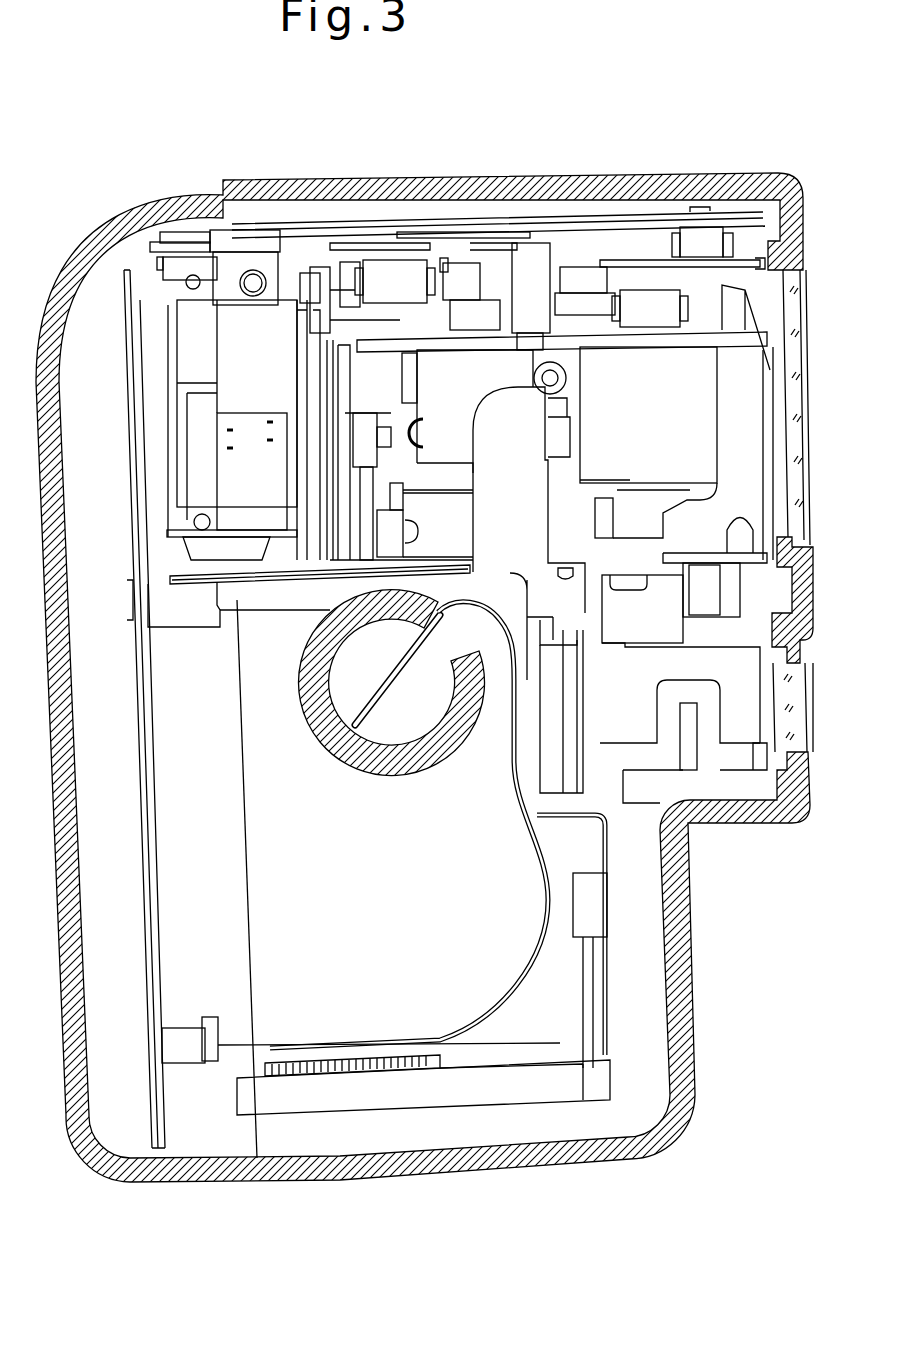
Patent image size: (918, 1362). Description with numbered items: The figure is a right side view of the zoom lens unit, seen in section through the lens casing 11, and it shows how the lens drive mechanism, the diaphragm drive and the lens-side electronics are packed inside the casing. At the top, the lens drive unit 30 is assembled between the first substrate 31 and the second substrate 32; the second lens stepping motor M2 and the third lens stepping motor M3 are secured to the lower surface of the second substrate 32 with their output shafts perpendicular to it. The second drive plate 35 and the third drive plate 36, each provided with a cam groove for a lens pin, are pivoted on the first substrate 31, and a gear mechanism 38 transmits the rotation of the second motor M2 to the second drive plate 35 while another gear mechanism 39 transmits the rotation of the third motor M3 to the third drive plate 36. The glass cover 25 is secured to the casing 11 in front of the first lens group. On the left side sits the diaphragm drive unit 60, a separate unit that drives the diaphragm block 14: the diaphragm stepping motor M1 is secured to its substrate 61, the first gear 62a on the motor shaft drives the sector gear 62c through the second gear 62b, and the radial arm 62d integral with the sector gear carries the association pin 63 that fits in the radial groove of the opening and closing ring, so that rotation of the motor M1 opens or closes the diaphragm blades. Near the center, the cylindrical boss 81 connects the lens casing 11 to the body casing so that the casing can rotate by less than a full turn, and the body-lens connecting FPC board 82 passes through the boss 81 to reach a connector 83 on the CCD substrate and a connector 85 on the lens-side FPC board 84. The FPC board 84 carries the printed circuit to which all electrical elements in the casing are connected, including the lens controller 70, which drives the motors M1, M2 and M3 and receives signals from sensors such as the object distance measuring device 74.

The lens casing 11 is at (678, 995).
The diaphragm block 14 is at (487, 283).
The glass cover 25 is at (803, 540).
The lens drive unit 30 is at (455, 216).
The first substrate 31 is at (625, 217).
The second substrate 32 is at (745, 334).
The second drive plate 35 is at (425, 237).
The third drive plate 36 is at (340, 270).
The gear mechanism 38 is at (664, 243).
The gear mechanism 39 is at (330, 245).
The diaphragm drive unit 60 is at (199, 446).
The substrate 61 is at (330, 445).
The first gear 62a is at (343, 352).
The second gear 62b is at (295, 584).
The sector gear 62c is at (318, 612).
The radial arm 62d is at (455, 468).
The association pin 63 is at (365, 530).
The lens controller 70 is at (395, 1057).
The object distance measuring device 74 is at (733, 730).
The cylindrical boss 81 is at (405, 777).
The body-lens connecting FPC board 82 is at (517, 1040).
The connector 83 is at (180, 1043).
The FPC board 84 is at (143, 683).
The connector 85 is at (595, 916).
The diaphragm stepping motor M1 is at (207, 385).
The second lens stepping motor M2 is at (705, 404).
The third lens stepping motor M3 is at (408, 498).